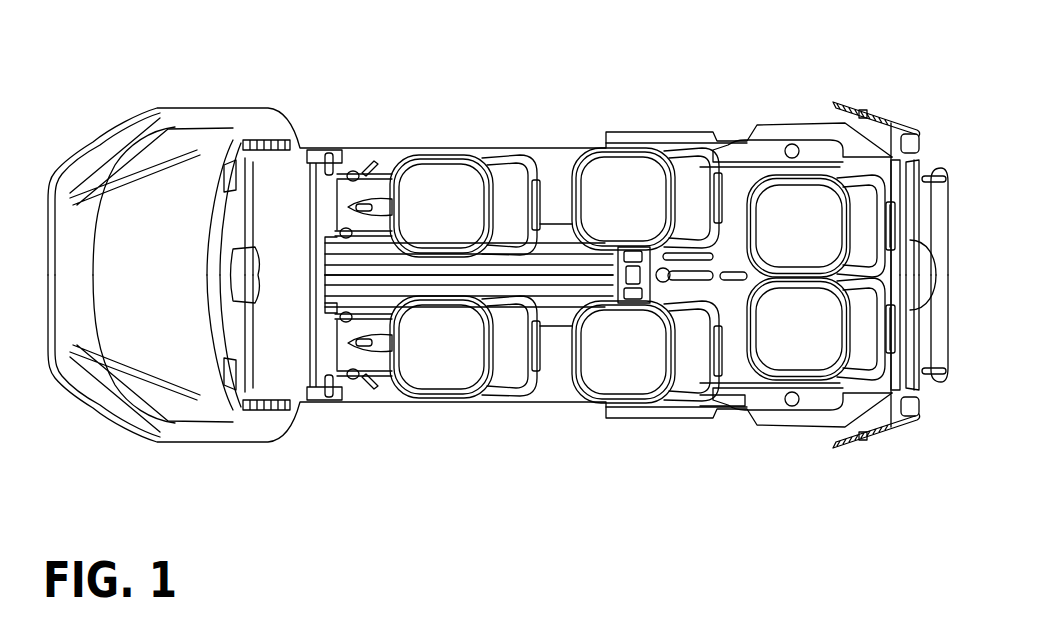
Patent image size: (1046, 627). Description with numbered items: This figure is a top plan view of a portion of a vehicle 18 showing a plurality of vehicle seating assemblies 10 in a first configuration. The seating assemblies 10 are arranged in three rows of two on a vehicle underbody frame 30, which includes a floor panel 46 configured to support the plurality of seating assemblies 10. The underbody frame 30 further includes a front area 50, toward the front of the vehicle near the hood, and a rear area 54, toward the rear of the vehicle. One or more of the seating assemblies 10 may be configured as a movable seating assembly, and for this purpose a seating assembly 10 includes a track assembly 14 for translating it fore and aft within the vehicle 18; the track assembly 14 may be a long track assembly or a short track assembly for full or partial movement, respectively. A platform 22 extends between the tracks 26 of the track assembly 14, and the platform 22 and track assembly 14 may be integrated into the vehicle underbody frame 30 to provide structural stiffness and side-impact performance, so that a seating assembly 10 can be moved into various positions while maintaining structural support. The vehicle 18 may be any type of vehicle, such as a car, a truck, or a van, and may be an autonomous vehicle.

The vehicle seating assembly 10 is at (438, 187).
The track assembly 14 is at (381, 165).
The vehicle 18 is at (817, 74).
The platform 22 is at (346, 196).
The tracks 26 is at (353, 171).
The vehicle underbody frame 30 is at (365, 399).
The floor panel 46 is at (552, 383).
The front area 50 is at (300, 178).
The rear area 54 is at (743, 377).